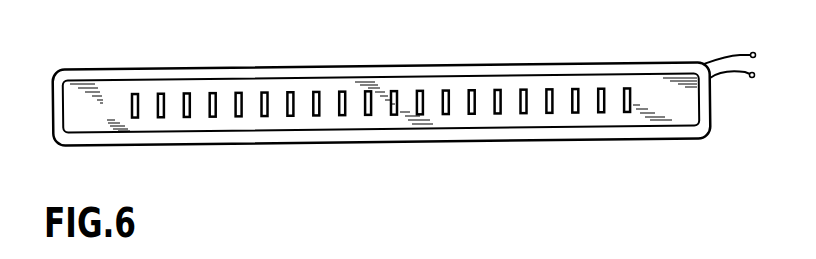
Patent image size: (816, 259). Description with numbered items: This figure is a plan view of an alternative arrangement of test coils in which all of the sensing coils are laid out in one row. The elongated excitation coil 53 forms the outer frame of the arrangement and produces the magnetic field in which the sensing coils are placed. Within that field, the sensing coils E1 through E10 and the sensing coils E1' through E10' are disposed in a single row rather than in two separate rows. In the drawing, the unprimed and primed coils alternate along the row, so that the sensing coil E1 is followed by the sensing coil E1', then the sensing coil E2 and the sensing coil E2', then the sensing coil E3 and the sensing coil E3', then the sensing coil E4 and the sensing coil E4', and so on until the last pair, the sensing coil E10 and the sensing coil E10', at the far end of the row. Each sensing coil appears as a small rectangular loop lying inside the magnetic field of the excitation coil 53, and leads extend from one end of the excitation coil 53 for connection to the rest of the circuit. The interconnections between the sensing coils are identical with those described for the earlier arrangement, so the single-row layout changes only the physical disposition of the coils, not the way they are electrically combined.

The excitation coil 53 is at (70, 82).
The sensing coil E1 is at (156, 73).
The sensing coil E1' is at (145, 142).
The sensing coil E2 is at (208, 72).
The sensing coil E2' is at (205, 141).
The sensing coil E3 is at (261, 72).
The sensing coil E3' is at (262, 141).
The sensing coil E4 is at (313, 72).
The sensing coil E4' is at (318, 141).
The sensing coil E10 is at (627, 67).
The sensing coil E10' is at (618, 136).